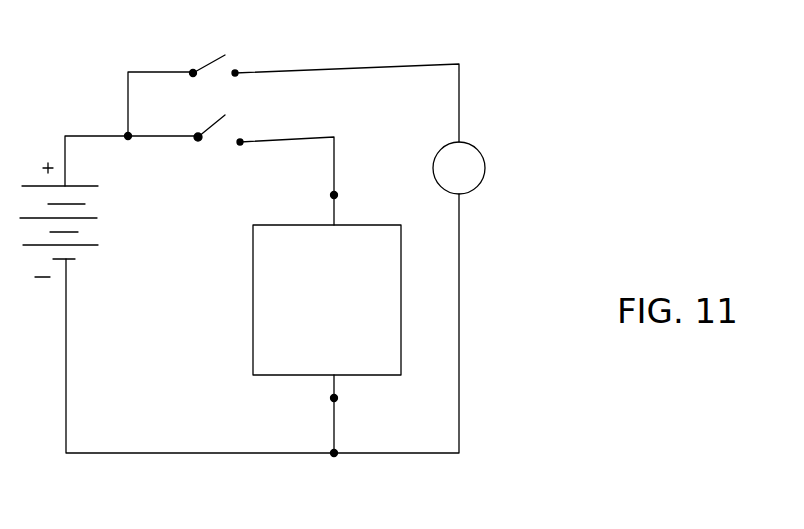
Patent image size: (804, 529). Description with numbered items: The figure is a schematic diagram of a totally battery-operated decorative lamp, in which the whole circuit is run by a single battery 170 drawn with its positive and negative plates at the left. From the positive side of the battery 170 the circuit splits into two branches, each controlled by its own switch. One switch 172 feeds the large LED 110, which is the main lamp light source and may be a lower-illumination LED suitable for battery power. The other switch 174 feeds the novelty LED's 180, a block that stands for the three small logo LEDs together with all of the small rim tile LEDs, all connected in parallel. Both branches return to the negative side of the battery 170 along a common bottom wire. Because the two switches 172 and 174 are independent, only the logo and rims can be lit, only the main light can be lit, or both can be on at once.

The large LED 110 is at (480, 140).
The battery 170 is at (89, 220).
The switch 172 is at (219, 56).
The switch 174 is at (215, 123).
The novelty LED's 180 is at (327, 300).